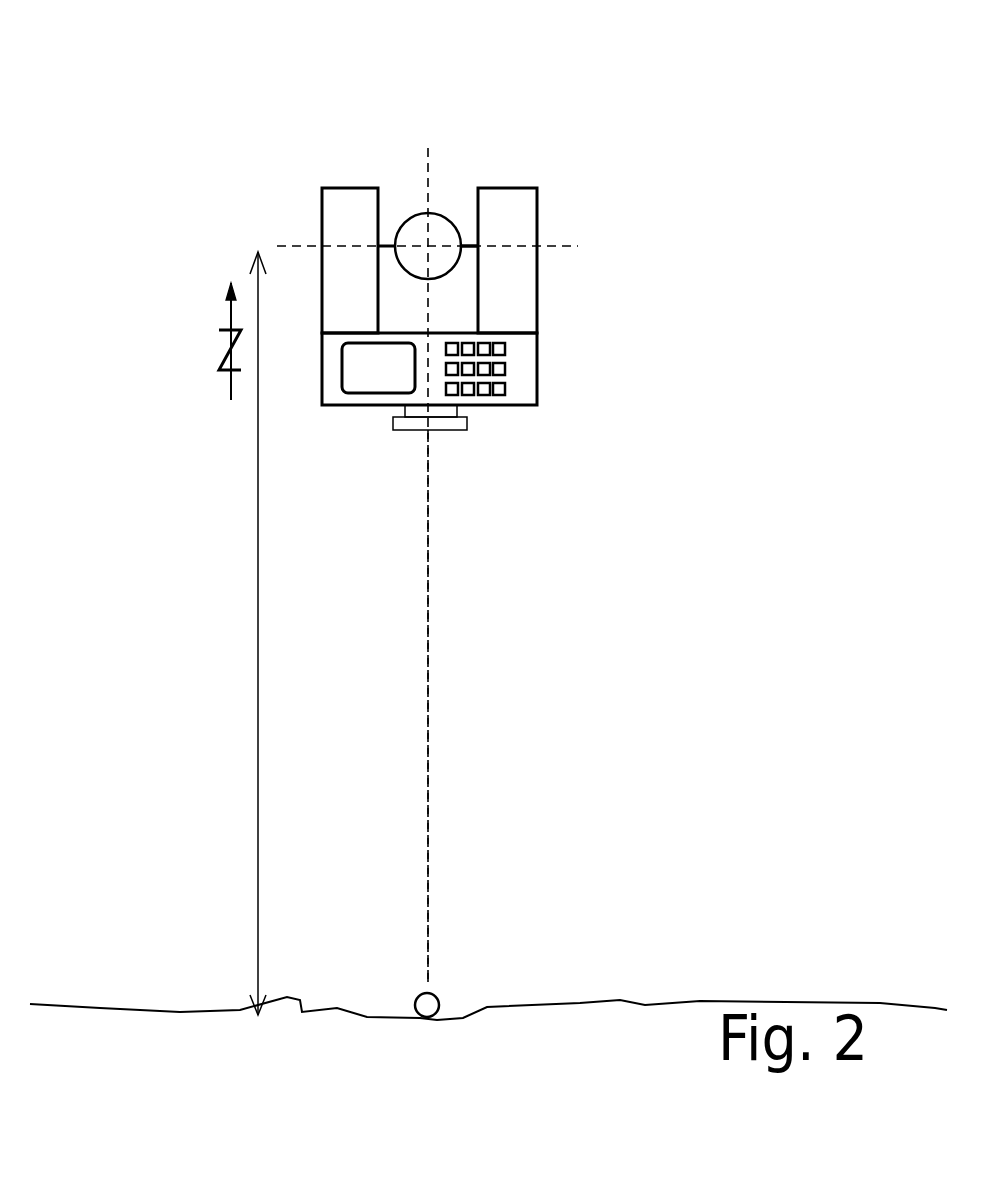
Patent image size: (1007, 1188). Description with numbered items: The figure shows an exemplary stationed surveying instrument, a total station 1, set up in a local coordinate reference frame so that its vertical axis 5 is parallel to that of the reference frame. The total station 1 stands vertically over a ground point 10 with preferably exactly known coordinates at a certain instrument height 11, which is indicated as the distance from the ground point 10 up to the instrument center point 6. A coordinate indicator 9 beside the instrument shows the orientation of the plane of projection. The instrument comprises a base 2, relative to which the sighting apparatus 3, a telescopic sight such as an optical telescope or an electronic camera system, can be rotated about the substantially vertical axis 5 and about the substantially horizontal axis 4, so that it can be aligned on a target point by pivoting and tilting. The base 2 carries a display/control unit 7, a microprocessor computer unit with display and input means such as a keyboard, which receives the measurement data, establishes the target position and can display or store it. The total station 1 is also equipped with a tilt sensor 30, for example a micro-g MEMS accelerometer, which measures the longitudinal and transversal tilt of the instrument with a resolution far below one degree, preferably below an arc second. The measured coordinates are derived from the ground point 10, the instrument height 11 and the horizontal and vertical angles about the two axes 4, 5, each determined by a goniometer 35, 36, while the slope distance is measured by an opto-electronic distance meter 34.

The total station 1 is at (437, 495).
The base 2 is at (469, 406).
The sighting apparatus 3 is at (481, 187).
The horizontal axis 4 is at (469, 204).
The vertical axis 5 is at (485, 706).
The instrument center point 6 is at (369, 169).
The display/control unit 7 is at (355, 411).
The coordinate indicator 9 is at (188, 373).
The ground point 10 is at (487, 971).
The instrument height 11 is at (192, 633).
The tilt sensor 30 is at (504, 456).
The opto-electronic distance meter 34 is at (509, 495).
The goniometer 35 is at (575, 274).
The goniometer 36 is at (371, 503).